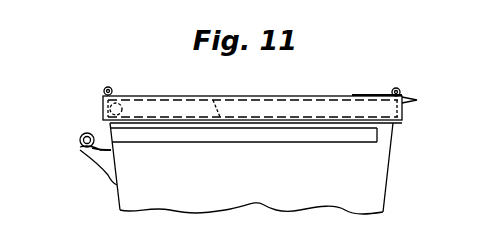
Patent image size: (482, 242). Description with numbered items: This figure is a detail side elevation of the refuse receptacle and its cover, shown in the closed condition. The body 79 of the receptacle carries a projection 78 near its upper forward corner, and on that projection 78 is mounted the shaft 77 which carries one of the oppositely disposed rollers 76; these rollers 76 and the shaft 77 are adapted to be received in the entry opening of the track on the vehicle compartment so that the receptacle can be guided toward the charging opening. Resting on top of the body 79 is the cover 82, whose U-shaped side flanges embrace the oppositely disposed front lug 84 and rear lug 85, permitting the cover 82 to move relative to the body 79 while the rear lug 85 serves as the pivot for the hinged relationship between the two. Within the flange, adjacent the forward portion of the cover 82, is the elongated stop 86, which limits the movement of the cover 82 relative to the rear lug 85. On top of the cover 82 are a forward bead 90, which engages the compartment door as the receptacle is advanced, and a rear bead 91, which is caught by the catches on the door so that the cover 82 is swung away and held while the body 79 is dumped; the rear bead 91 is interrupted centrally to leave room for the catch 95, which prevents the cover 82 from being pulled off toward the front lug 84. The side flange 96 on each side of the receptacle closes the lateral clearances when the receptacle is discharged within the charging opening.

The roller 76 is at (80, 150).
The shaft 77 is at (80, 137).
The projection 78 is at (98, 158).
The body 79 is at (251, 168).
The cover 82 is at (311, 96).
The front lug 84 is at (106, 108).
The rear lug 85 is at (417, 100).
The elongated stop 86 is at (218, 115).
The forward bead 90 is at (112, 89).
The rear bead 91 is at (399, 90).
The catch 95 is at (405, 98).
The side flange 96 is at (209, 128).